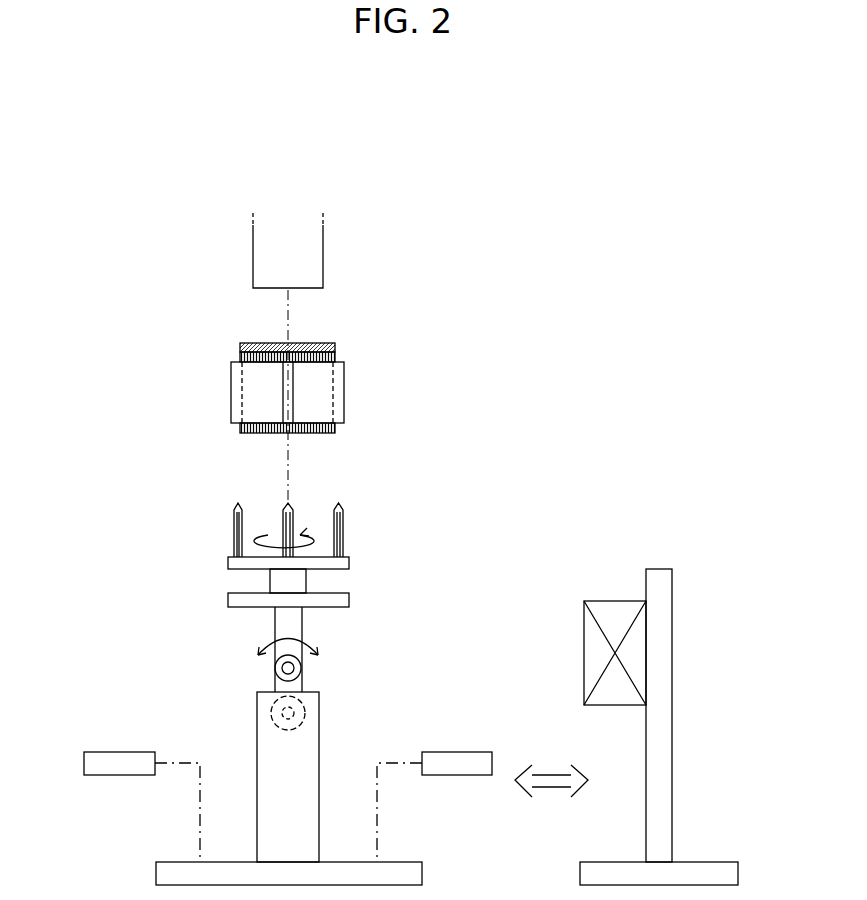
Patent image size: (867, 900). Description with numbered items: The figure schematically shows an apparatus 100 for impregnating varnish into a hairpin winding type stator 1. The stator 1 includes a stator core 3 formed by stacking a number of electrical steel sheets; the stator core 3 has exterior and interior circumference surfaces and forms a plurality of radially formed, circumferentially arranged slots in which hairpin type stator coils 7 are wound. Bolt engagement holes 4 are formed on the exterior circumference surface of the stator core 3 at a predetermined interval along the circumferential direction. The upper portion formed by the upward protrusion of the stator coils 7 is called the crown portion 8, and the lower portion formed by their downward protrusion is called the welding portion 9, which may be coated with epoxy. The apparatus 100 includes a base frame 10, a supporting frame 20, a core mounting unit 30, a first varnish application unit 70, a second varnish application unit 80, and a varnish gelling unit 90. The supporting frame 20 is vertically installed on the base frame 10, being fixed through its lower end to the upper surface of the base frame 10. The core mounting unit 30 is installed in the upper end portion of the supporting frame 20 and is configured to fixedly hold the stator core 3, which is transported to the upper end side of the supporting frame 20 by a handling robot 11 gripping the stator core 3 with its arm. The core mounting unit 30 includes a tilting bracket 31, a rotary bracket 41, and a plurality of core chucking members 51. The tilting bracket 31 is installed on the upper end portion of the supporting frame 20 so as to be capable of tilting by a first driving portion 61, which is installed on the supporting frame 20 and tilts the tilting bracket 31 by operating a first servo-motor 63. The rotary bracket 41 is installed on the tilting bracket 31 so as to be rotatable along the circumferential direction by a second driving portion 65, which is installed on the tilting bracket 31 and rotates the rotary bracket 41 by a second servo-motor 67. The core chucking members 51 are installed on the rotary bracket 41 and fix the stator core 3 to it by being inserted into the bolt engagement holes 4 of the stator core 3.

The apparatus for impregnating varnish 100 is at (154, 196).
The stator 1 is at (222, 356).
The stator core 3 is at (254, 380).
The bolt engagement holes 4 is at (240, 405).
The hairpin type stator coils 7 is at (338, 388).
The crown portion 8 is at (335, 345).
The welding portion 9 is at (335, 430).
The handling robot 11 is at (323, 255).
The core mounting unit 30 is at (361, 580).
The core chucking members 51 is at (234, 521).
The rotary bracket 41 is at (228, 562).
The second driving portion 65 is at (269, 580).
The tilting bracket 31 is at (228, 600).
The second servo-motor 67 is at (306, 583).
The first driving portion 61 is at (307, 711).
The first servo-motor 63 is at (270, 716).
The supporting frame 20 is at (319, 732).
The base frame 10 is at (156, 872).
The second varnish application unit 80 is at (117, 752).
The first varnish application unit 70 is at (462, 752).
The varnish gelling unit 90 is at (689, 649).